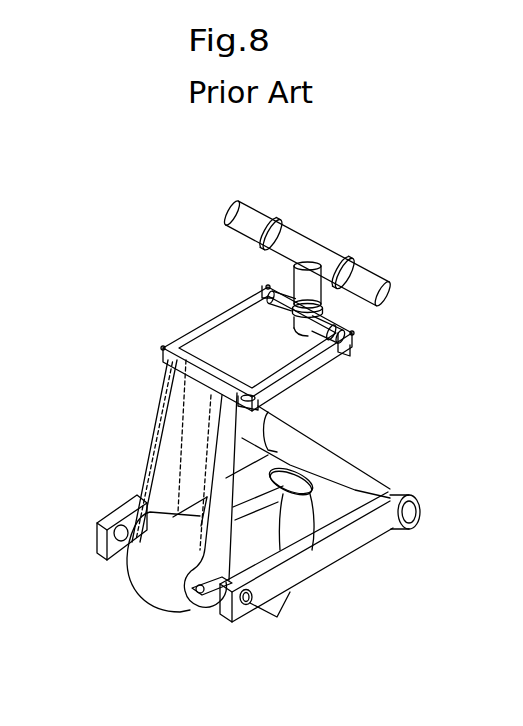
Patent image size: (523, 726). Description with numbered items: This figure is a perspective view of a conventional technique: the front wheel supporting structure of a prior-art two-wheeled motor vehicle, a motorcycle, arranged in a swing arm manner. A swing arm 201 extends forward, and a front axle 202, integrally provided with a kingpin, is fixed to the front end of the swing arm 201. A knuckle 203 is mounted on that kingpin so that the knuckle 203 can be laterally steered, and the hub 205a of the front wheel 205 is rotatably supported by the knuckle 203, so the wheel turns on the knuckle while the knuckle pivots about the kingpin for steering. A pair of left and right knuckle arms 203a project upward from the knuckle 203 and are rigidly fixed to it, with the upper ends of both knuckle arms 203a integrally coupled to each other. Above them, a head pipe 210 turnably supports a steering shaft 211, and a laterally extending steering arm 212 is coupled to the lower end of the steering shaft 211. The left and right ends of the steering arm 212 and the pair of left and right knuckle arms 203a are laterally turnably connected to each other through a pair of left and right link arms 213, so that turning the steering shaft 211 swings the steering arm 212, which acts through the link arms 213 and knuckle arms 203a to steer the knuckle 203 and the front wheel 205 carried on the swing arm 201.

The swing arm 201 is at (198, 486).
The front axle 202 is at (250, 603).
The knuckle 203 is at (198, 594).
The knuckle arm 203a is at (229, 481).
The front wheel 205 is at (290, 525).
The hub 205a is at (155, 557).
The head pipe 210 is at (303, 287).
The steering shaft 211 is at (297, 264).
The steering arm 212 is at (333, 322).
The link arm 213 is at (227, 323).